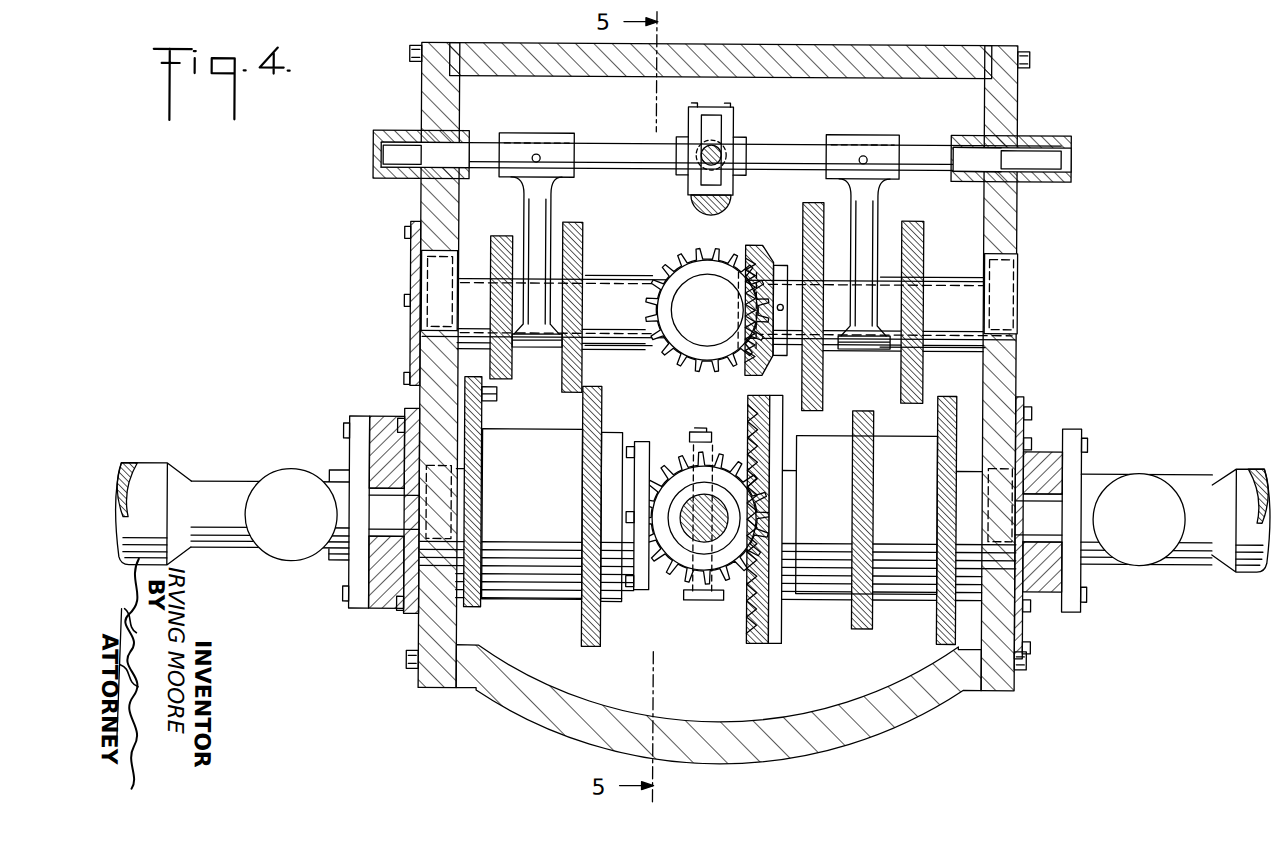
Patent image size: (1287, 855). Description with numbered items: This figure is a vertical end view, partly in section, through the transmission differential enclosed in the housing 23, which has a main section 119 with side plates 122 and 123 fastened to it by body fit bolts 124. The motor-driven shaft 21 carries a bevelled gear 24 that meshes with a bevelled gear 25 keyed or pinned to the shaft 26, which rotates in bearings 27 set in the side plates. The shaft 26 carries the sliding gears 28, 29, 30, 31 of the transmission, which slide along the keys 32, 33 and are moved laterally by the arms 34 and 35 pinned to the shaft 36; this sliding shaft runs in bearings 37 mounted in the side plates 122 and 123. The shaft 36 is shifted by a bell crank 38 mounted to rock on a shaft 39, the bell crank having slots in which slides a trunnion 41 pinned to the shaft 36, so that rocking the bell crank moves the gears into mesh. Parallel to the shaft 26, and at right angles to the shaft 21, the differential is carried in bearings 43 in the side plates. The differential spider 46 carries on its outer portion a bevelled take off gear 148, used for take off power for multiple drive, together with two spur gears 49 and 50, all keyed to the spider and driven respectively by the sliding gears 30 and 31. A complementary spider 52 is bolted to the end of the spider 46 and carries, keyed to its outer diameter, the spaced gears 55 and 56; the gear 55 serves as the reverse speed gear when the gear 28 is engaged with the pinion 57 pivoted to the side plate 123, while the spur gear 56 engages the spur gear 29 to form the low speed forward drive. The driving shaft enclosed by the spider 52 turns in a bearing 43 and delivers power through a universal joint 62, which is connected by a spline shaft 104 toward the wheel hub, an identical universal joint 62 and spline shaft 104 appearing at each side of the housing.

The shaft 21 is at (695, 318).
The housing 23 is at (884, 722).
The bevelled gear 24 is at (722, 256).
The bevelled gear 25 is at (765, 256).
The shaft 26 is at (618, 300).
The bearings 27 is at (430, 254).
The sliding gear 28 is at (506, 225).
The sliding gear 29 is at (576, 224).
The sliding gear 30 is at (808, 203).
The sliding gear 31 is at (912, 221).
The key 32 is at (598, 280).
The key 33 is at (938, 283).
The arm 34 is at (874, 135).
The arm 35 is at (540, 134).
The shaft 36 is at (600, 144).
The bearings 37 is at (392, 136).
The bell crank 38 is at (733, 122).
The shaft 39 is at (690, 213).
The trunnion 41 is at (746, 150).
The bearings 43 is at (440, 478).
The differential spider 46 is at (668, 444).
The spur gear 49 is at (856, 630).
The spur gear 50 is at (940, 646).
The complementary spider 52 is at (641, 442).
The gear 55 is at (478, 608).
The spur gear 56 is at (583, 640).
The pinion 57 is at (497, 396).
The universal joint 62 is at (292, 470).
The spline shaft 104 is at (146, 468).
The main section 119 is at (522, 706).
The side plate 122 is at (1018, 402).
The side plate 123 is at (432, 200).
The body fit bolts 124 is at (410, 50).
The bevelled take off gear 148 is at (758, 640).